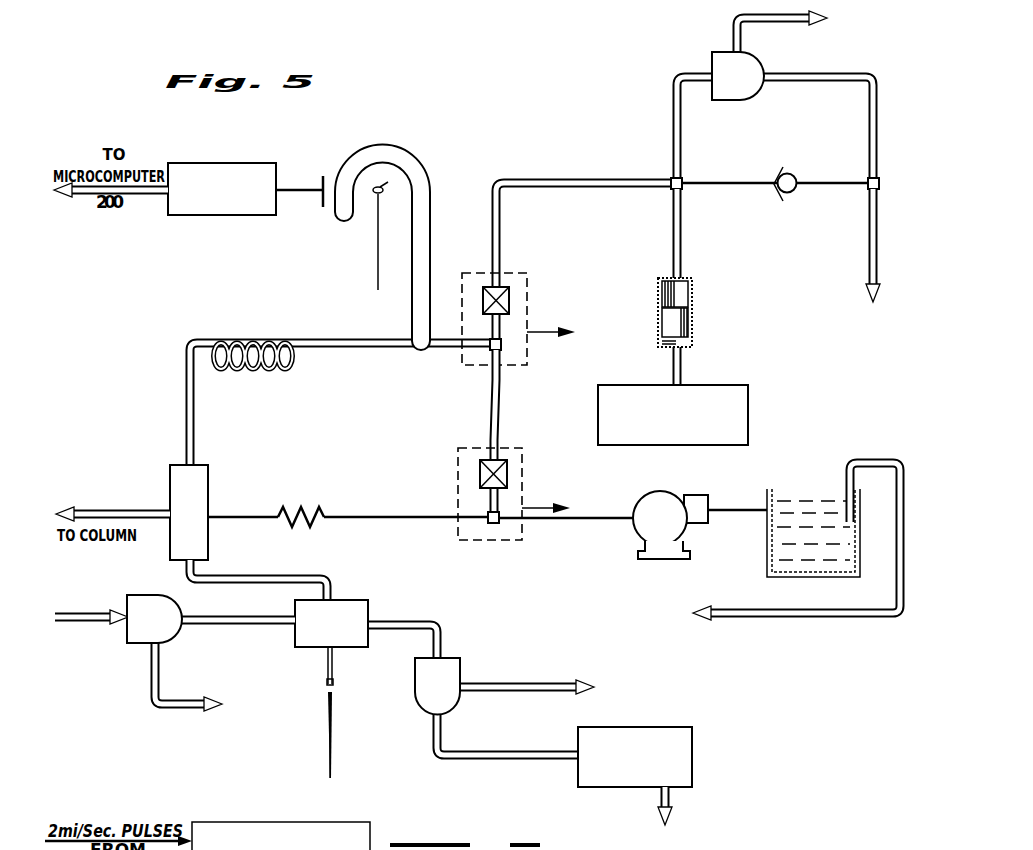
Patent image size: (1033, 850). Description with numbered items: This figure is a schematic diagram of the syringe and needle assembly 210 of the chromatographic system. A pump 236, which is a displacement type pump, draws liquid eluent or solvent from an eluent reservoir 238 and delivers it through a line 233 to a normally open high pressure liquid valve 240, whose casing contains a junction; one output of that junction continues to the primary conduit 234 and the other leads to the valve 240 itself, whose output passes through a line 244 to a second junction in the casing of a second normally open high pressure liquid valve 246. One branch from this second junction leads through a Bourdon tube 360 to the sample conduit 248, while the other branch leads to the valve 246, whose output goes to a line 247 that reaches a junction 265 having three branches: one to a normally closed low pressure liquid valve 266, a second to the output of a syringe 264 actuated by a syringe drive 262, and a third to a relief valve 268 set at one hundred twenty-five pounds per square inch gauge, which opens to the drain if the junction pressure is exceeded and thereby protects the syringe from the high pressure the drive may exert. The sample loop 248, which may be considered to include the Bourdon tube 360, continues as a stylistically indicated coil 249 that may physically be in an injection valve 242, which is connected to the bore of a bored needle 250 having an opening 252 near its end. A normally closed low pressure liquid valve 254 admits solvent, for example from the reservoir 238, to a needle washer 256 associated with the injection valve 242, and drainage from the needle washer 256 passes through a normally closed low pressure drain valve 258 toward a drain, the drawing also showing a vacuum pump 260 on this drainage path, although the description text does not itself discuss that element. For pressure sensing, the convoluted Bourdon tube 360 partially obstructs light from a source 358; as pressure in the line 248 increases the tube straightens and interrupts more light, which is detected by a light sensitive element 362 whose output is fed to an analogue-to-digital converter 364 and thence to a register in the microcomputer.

The syringe and needle assembly 210 is at (203, 127).
The analogue-to-digital converter 364 is at (226, 212).
The light sensitive element 362 is at (322, 207).
The Bourdon tube 360 is at (408, 153).
The light source 358 is at (379, 245).
The coil 249 is at (237, 339).
The sample conduit 248 is at (398, 352).
The line 247 is at (500, 238).
The second normally open high pressure liquid valve 246 is at (527, 273).
The line 244 is at (499, 402).
The normally open high pressure liquid valve 240 is at (522, 448).
The injection valve 242 is at (205, 471).
The primary conduit 234 is at (365, 517).
The line 233 is at (590, 526).
The pump 236 is at (673, 494).
The eluent reservoir 238 is at (767, 549).
The junction 265 is at (672, 180).
The normally closed low pressure liquid valve 266 is at (714, 50).
The relief valve 268 is at (792, 176).
The syringe 264 is at (693, 283).
The syringe drive 262 is at (746, 394).
The needle washer 256 is at (366, 606).
The normally closed low pressure liquid valve 254 is at (172, 613).
The bored needle 250 is at (323, 661).
The opening 252 is at (326, 729).
The normally closed low pressure liquid valve 258 is at (457, 663).
The vacuum pump 260 is at (689, 741).